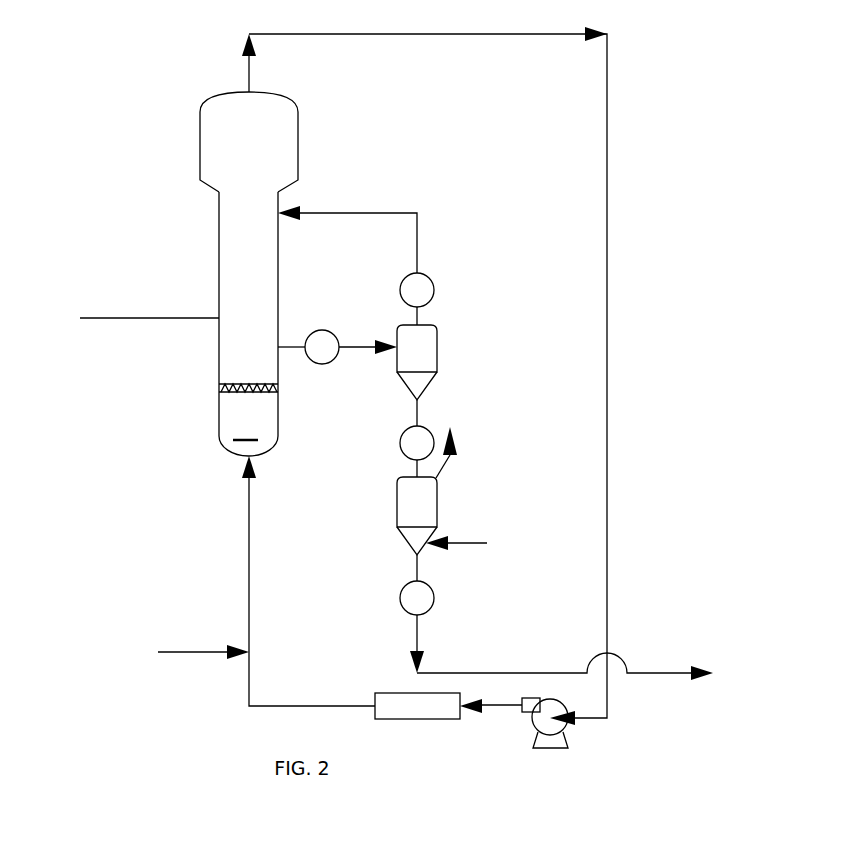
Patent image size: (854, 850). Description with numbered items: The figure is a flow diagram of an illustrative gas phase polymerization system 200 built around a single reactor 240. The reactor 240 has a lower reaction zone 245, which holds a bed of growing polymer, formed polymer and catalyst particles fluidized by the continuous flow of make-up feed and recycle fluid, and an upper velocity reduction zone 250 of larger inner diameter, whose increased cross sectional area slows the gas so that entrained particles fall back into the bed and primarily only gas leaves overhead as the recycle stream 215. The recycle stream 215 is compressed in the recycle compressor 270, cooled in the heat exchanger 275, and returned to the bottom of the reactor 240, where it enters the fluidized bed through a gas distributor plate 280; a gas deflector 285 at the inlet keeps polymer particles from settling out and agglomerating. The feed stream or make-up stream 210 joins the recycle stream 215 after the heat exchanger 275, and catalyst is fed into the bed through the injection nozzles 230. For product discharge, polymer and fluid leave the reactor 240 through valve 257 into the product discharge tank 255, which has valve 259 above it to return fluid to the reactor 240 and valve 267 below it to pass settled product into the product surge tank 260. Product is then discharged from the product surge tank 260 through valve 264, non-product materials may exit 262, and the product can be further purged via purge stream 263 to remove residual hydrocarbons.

The polymerization system 200 is at (180, 74).
The feed stream or make-up stream 210 is at (195, 648).
The recycle stream 215 is at (410, 37).
The injection nozzles 230 is at (120, 312).
The reactor 240 is at (240, 232).
The reaction zone 245 is at (278, 242).
The velocity reduction zone 250 is at (298, 128).
The product discharge tank 255 is at (437, 355).
The valve 257 is at (322, 365).
The valve 259 is at (399, 287).
The product surge tank 260 is at (397, 500).
The non-product materials exit 262 is at (452, 458).
The purge stream 263 is at (469, 546).
The valve 264 is at (400, 595).
The valve 267 is at (399, 440).
The recycle compressor 270 is at (553, 750).
The heat exchanger 275 is at (425, 720).
The gas distributor plate 280 is at (219, 387).
The gas deflector 285 is at (233, 436).